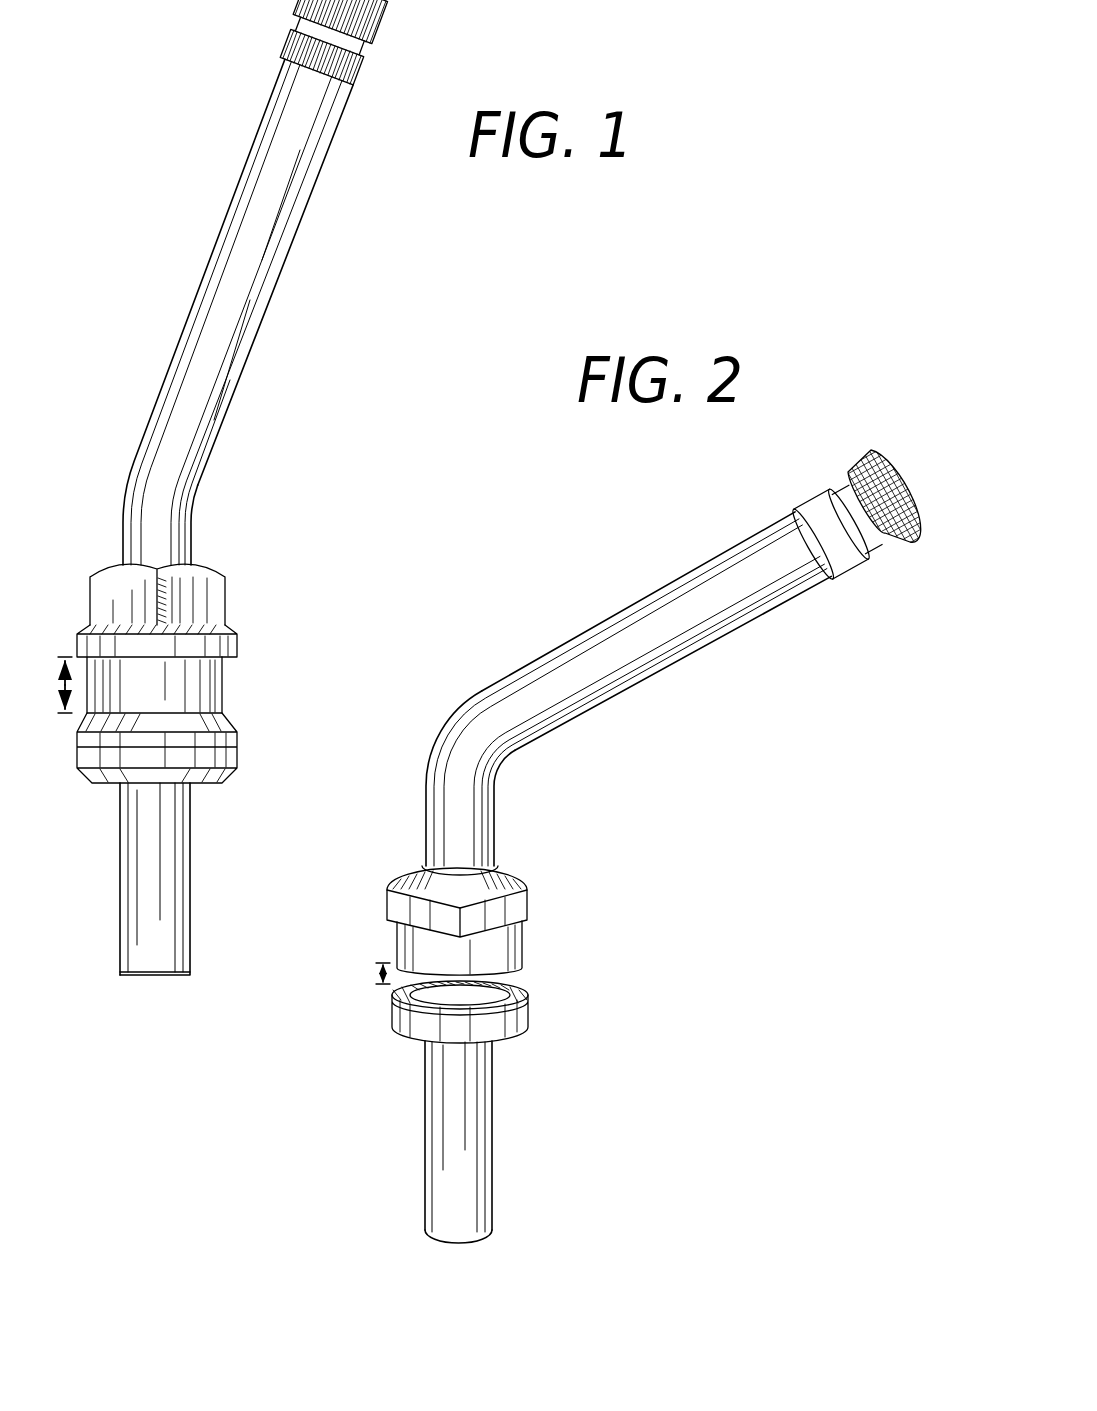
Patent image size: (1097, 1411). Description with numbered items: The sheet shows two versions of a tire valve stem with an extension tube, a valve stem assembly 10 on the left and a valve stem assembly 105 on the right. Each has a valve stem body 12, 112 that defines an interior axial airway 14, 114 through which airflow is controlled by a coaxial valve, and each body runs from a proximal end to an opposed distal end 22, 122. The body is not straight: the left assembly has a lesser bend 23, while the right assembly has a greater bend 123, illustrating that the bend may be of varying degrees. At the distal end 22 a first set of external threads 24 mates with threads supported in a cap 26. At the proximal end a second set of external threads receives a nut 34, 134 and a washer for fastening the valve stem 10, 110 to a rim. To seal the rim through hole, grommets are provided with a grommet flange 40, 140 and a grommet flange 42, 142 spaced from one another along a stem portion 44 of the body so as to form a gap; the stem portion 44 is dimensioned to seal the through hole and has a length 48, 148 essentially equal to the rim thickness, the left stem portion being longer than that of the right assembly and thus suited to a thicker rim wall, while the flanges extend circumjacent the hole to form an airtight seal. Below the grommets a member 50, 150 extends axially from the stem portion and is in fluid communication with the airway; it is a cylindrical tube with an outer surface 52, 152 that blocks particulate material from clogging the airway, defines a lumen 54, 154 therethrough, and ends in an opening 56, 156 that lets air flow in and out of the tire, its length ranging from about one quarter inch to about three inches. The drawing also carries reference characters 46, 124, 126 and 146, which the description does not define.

In FIG. 1, the valve stem assembly 10 is at (212, 190).
In FIG. 1, the valve stem body 12 is at (243, 288).
In FIG. 1, the interior axial airway 14 is at (159, 385).
In FIG. 1, the distal end 22 is at (345, 113).
In FIG. 1, the bend 23 is at (194, 497).
In FIG. 1, the first set of external threads 24 is at (278, 57).
In FIG. 1, the cap 26 is at (368, 48).
In FIG. 1, the nut 34 is at (228, 600).
In FIG. 1, the grommet flange 40 is at (238, 632).
In FIG. 1, the grommet flange 42 is at (209, 789).
In FIG. 1, the stem portion 44 is at (224, 686).
In FIG. 1, the body portion 46 is at (266, 682).
In FIG. 1, the length 48 is at (41, 653).
In FIG. 1, the member 50 is at (197, 908).
In FIG. 1, the outer surface 52 is at (149, 855).
In FIG. 1, the lumen 54 is at (118, 930).
In FIG. 1, the opening 56 is at (166, 978).
In FIG. 2, the valve stem assembly 105 is at (531, 514).
In FIG. 2, the valve stem 110 is at (704, 554).
In FIG. 2, the valve stem body 112 is at (700, 652).
In FIG. 2, the interior axial airway 114 is at (595, 656).
In FIG. 2, the distal end 122 is at (797, 598).
In FIG. 2, the bend 123 is at (504, 795).
In FIG. 2, the collar ring 124 is at (782, 505).
In FIG. 2, the valve cap 126 is at (872, 543).
In FIG. 2, the nut 134 is at (535, 902).
In FIG. 2, the grommet flange 140 is at (527, 938).
In FIG. 2, the grommet flange 142 is at (504, 1021).
In FIG. 2, the body lower portion 146 is at (515, 975).
In FIG. 2, the length 148 is at (349, 945).
In FIG. 2, the member 150 is at (496, 1118).
In FIG. 2, the outer surface 152 is at (451, 1107).
In FIG. 2, the lumen 154 is at (446, 1156).
In FIG. 2, the opening 156 is at (455, 1248).